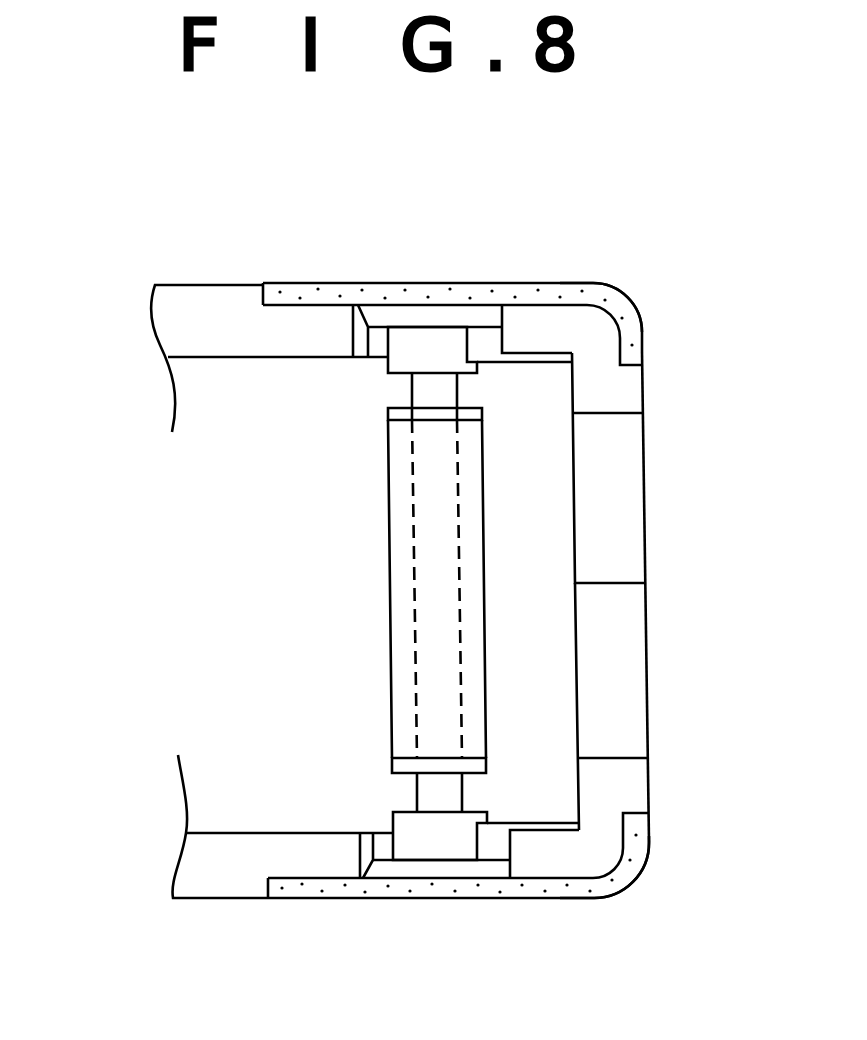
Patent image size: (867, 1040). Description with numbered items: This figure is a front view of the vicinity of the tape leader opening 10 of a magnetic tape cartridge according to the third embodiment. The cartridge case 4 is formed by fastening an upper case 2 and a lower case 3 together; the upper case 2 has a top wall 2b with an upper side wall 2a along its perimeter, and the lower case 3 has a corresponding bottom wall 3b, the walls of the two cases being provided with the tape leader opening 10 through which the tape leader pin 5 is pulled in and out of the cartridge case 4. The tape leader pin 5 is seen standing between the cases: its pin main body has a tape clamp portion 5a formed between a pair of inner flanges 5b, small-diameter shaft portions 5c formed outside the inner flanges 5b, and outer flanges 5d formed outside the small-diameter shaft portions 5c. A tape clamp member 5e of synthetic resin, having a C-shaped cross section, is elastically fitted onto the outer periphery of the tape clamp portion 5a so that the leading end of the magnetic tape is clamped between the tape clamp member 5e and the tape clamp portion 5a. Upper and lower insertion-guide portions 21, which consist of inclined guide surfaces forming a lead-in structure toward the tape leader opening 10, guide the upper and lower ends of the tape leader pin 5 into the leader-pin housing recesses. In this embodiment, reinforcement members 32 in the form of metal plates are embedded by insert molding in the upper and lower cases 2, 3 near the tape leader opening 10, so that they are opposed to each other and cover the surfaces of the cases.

The upper case 2 is at (202, 318).
The upper side wall 2a is at (268, 292).
The top wall 2b is at (627, 503).
The lower case 3 is at (236, 878).
The bottom wall 3b is at (628, 706).
The cartridge case 4 is at (688, 263).
The tape leader pin 5 is at (390, 592).
The tape clamp portion 5a is at (417, 612).
The inner flange 5b is at (470, 417).
The small-diameter shaft portion 5c is at (418, 393).
The outer flange 5d is at (423, 347).
The tape clamp member 5e is at (403, 686).
The tape leader opening 10 is at (203, 461).
The insertion-guide portion 21 is at (456, 318).
The reinforcement member 32 is at (565, 290).